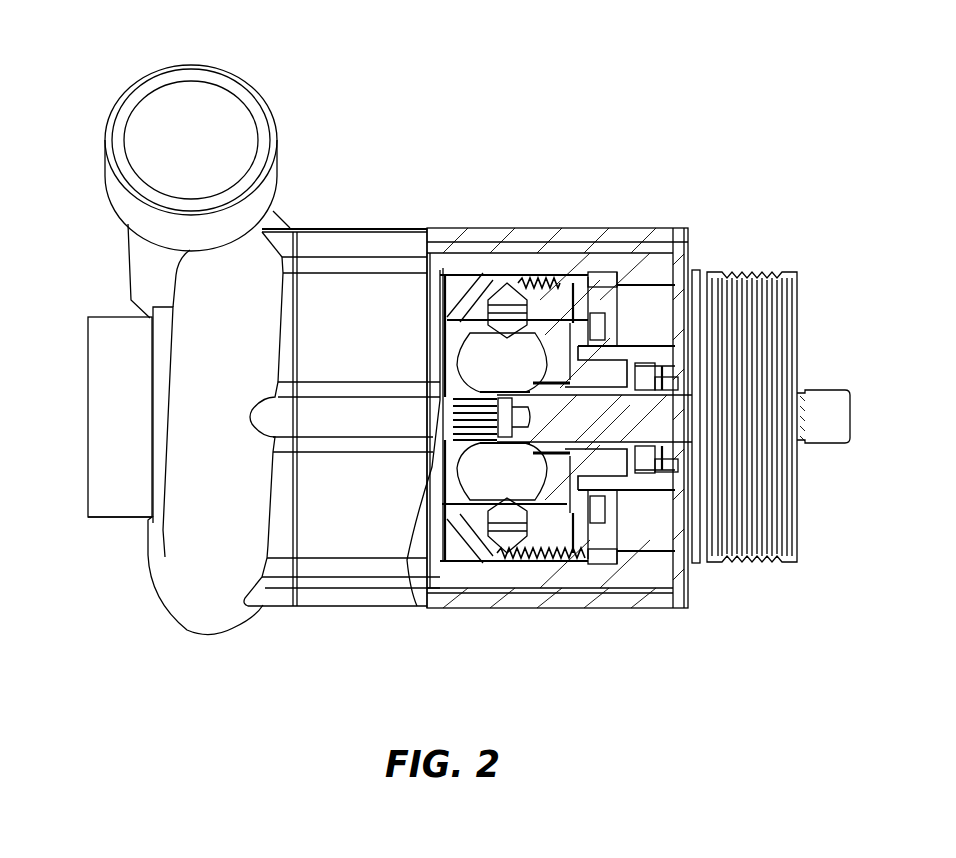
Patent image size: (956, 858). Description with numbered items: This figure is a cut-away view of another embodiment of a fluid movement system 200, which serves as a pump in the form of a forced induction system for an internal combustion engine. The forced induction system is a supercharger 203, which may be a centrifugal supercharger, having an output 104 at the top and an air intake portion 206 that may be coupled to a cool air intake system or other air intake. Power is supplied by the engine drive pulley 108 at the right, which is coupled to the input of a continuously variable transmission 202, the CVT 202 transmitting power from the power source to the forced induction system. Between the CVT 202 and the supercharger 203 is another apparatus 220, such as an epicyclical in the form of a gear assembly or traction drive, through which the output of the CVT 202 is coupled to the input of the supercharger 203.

The pump assembly 200 is at (684, 84).
The output 104 is at (103, 147).
The supercharger 203 is at (252, 637).
The air intake portion 206 is at (88, 393).
The apparatus 220 is at (355, 230).
The continuously variable transmission 202 is at (513, 230).
The engine drive pulley 108 is at (747, 277).